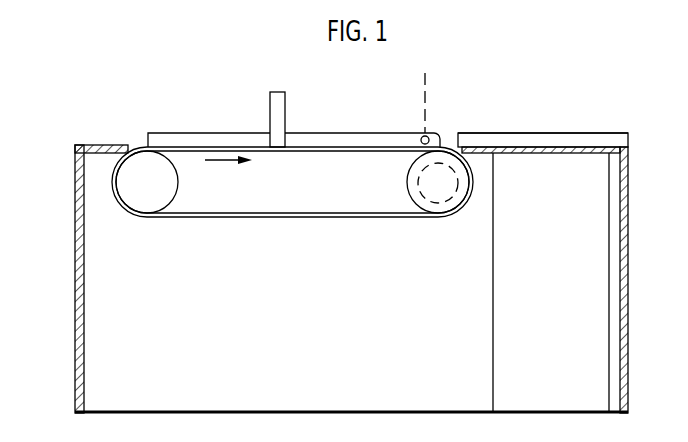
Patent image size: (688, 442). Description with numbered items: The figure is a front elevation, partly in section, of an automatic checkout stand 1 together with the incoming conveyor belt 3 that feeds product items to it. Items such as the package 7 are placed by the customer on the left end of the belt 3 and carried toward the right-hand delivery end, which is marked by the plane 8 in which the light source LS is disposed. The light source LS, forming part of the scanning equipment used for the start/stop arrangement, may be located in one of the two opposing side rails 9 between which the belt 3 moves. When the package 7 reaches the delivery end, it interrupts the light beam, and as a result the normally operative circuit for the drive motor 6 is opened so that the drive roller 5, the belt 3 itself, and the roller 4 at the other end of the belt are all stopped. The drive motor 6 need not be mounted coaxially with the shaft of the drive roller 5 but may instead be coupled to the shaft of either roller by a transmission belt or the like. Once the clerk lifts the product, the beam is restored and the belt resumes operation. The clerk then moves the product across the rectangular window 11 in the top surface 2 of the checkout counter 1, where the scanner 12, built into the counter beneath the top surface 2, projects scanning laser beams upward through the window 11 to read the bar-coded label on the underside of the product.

The checkout stand 1 is at (70, 263).
The top surface 2 is at (595, 148).
The incoming conveyor belt 3 is at (302, 152).
The roller 4 is at (178, 183).
The drive roller 5 is at (407, 183).
The drive motor 6 is at (428, 205).
The package 7 is at (282, 92).
The plane 8 is at (423, 86).
The side rails 9 is at (340, 132).
The rectangular window 11 is at (560, 145).
The scanner 12 is at (493, 260).
The light source LS is at (422, 136).